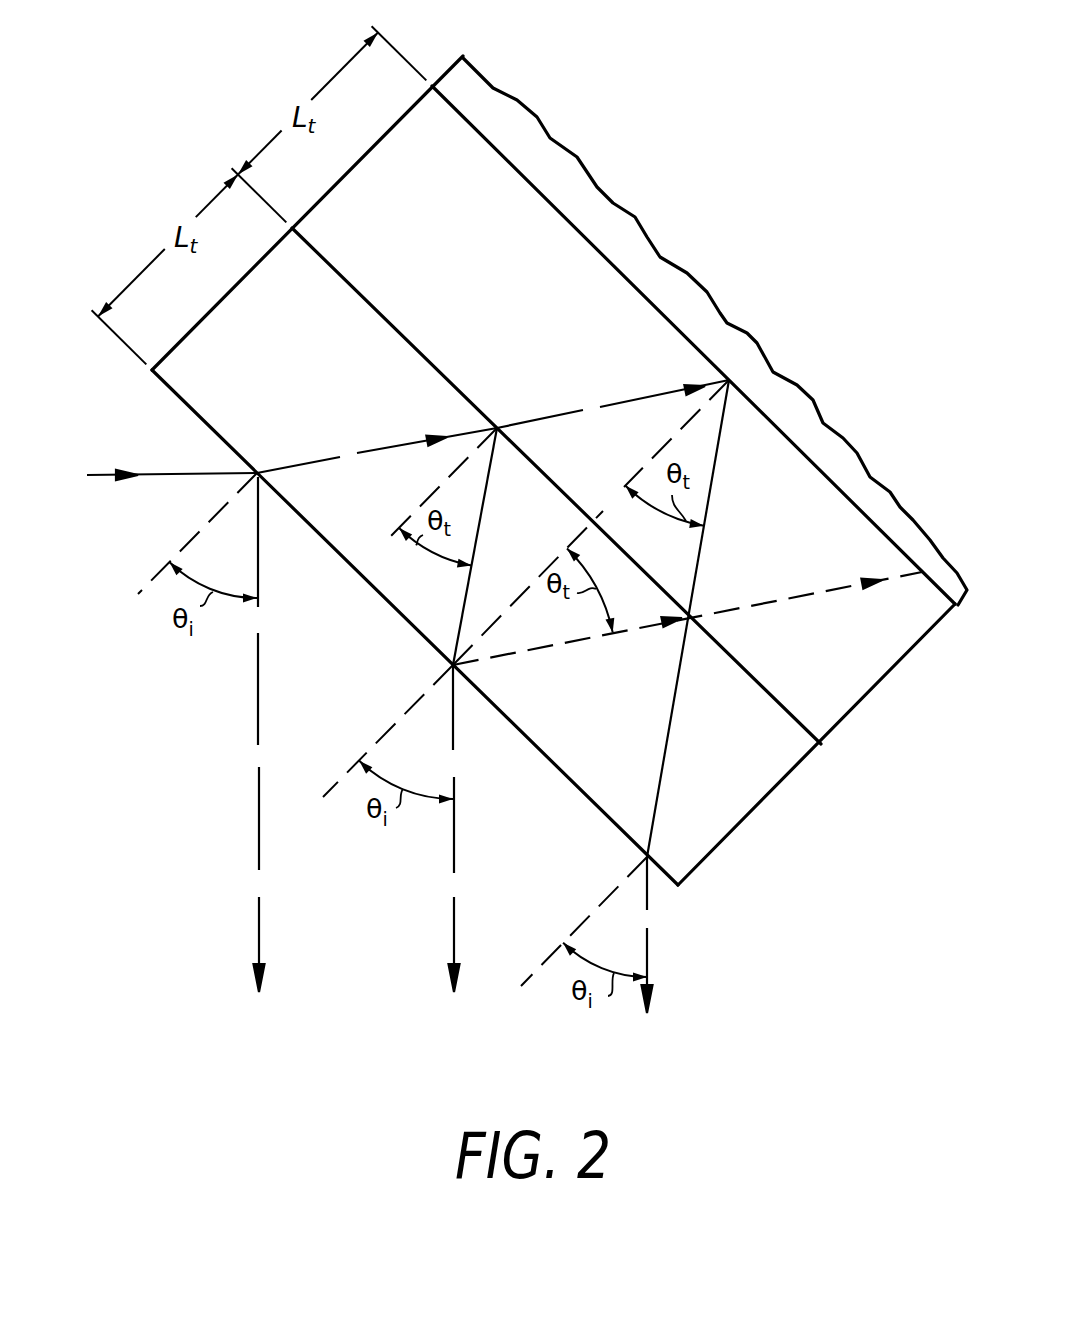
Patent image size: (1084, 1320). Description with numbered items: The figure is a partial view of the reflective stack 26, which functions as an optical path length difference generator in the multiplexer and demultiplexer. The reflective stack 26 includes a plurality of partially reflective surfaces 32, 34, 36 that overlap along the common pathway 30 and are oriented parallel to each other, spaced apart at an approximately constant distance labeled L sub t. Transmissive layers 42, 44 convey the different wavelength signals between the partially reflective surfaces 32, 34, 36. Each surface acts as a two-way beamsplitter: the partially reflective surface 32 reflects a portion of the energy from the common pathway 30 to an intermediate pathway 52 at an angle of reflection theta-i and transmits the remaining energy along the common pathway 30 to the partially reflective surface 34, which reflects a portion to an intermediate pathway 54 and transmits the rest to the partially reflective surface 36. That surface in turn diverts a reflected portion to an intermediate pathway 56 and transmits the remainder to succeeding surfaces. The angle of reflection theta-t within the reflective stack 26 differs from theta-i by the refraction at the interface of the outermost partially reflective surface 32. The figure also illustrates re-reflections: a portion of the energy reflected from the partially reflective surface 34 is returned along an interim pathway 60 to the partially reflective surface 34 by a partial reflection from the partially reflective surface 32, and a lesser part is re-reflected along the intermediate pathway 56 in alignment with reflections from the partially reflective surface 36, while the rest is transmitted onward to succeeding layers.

The reflective stack 26 is at (553, 137).
The common pathway 30 is at (170, 478).
The partially reflective surface 32 is at (187, 406).
The partially reflective surface 34 is at (353, 288).
The partially reflective surface 36 is at (537, 191).
The transmissive layer 42 is at (743, 772).
The transmissive layer 44 is at (836, 668).
The intermediate pathway 52 is at (259, 825).
The intermediate pathway 54 is at (455, 933).
The intermediate pathway 56 is at (651, 934).
The interim pathway 60 is at (530, 650).